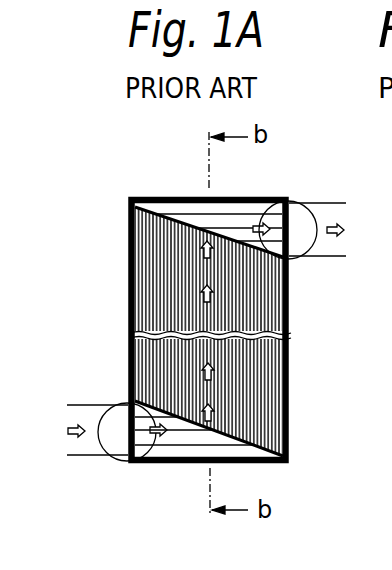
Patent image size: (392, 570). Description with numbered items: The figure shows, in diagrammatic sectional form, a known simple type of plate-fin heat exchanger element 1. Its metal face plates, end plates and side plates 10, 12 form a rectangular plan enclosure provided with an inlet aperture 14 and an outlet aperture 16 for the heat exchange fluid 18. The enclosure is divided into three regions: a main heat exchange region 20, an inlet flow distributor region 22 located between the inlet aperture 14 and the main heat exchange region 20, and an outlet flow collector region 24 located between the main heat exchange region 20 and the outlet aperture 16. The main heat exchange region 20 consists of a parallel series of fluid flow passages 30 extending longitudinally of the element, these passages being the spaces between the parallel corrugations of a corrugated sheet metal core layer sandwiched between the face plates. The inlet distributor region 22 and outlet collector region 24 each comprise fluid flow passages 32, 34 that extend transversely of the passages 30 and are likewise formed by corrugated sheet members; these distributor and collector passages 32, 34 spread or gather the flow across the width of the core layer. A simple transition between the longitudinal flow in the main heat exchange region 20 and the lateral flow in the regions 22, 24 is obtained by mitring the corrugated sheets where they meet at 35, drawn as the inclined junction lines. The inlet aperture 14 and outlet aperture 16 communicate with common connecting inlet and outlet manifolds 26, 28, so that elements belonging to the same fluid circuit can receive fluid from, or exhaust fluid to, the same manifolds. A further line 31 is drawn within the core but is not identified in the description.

The plate-fin heat exchanger element 1 is at (122, 194).
The side plate 10 is at (128, 371).
The side plate 12 is at (290, 371).
The inlet aperture 14 is at (138, 462).
The outlet aperture 16 is at (273, 213).
The heat exchange fluid 18 is at (343, 227).
The main heat exchange region 20 is at (155, 300).
The inlet flow distributor region 22 is at (197, 438).
The outlet flow collector region 24 is at (200, 225).
The inlet manifold 26 is at (118, 438).
The outlet manifold 28 is at (293, 222).
The fluid flow passages 30 is at (150, 247).
The partition wall 31 is at (213, 275).
The distributor passages 32 is at (208, 440).
The collector passages 34 is at (233, 228).
The mitred junction 35 is at (132, 218).